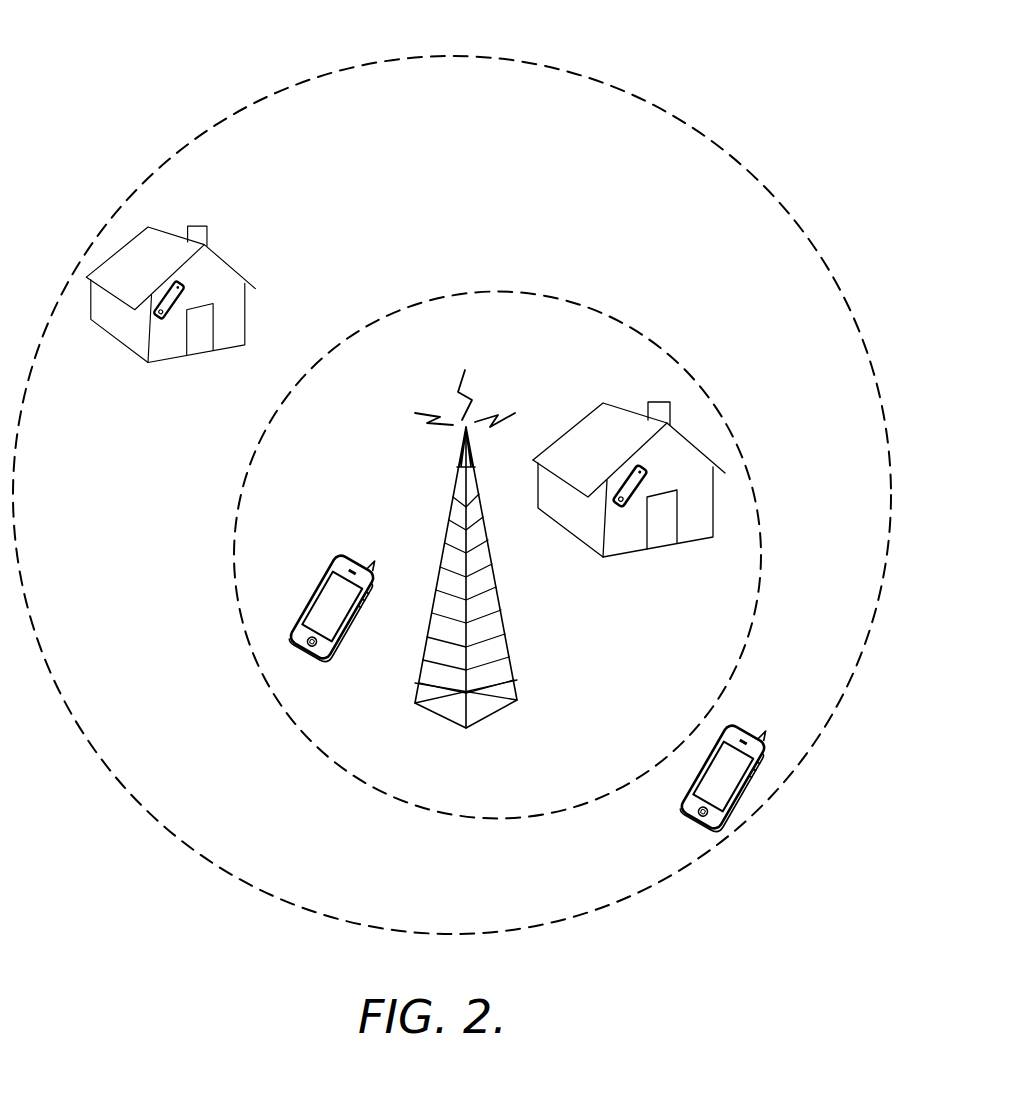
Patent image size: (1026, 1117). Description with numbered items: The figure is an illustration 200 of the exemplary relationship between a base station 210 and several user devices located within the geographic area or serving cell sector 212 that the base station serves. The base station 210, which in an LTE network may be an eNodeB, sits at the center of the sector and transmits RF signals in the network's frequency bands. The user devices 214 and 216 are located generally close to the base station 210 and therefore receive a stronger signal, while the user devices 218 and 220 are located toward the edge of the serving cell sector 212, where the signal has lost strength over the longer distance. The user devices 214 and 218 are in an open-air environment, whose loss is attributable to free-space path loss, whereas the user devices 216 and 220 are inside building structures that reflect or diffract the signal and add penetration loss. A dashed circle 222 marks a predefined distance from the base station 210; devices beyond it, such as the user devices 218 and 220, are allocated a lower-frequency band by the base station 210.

The illustration 200 is at (146, 48).
The base station 210 is at (498, 595).
The serving cell sector 212 is at (682, 122).
The user device 214 is at (308, 597).
The user device 216 is at (647, 481).
The user device 218 is at (747, 723).
The user device 220 is at (184, 291).
The dashed circle 222 is at (602, 313).